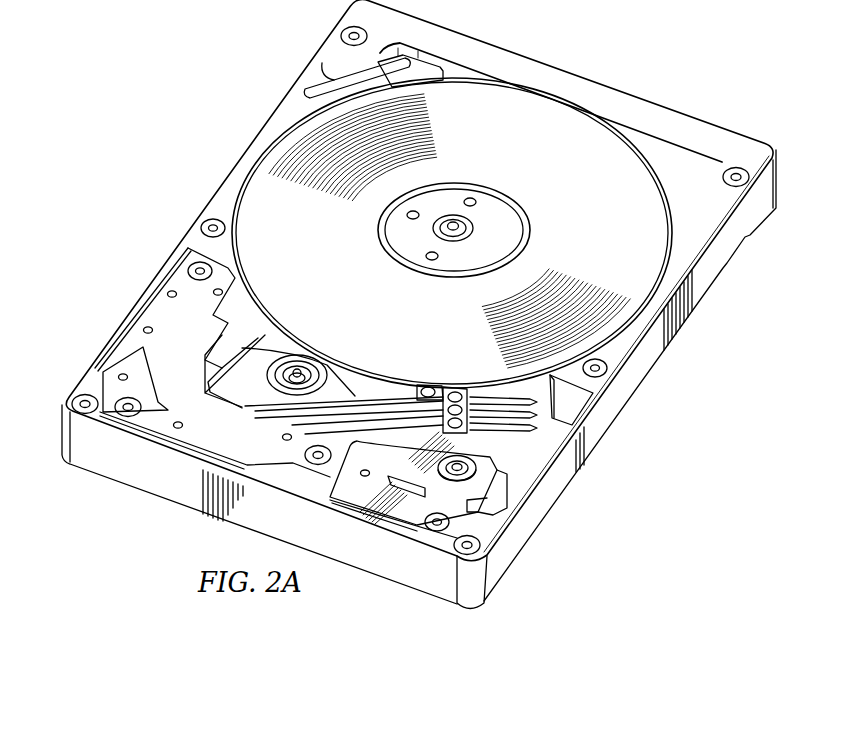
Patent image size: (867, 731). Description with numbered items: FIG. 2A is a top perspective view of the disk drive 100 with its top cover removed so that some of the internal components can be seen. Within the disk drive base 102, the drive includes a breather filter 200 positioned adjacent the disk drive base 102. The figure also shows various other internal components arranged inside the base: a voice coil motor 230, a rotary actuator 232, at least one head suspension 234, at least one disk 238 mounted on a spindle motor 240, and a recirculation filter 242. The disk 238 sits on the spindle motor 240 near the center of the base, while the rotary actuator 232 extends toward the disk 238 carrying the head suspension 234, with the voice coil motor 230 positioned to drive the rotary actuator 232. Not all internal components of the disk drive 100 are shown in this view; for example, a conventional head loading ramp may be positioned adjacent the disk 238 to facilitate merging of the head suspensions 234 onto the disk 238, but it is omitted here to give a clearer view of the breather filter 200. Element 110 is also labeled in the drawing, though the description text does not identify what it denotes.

The disk drive 100 is at (597, 59).
The disk drive base 102 is at (692, 298).
The voice coil motor 110 is at (477, 453).
The breather filter 200 is at (500, 496).
The voice coil motor 230 is at (165, 308).
The rotary actuator 232 is at (362, 383).
The head suspension 234 is at (493, 400).
The disk 238 is at (331, 240).
The spindle motor 240 is at (455, 200).
The recirculation filter 242 is at (350, 80).